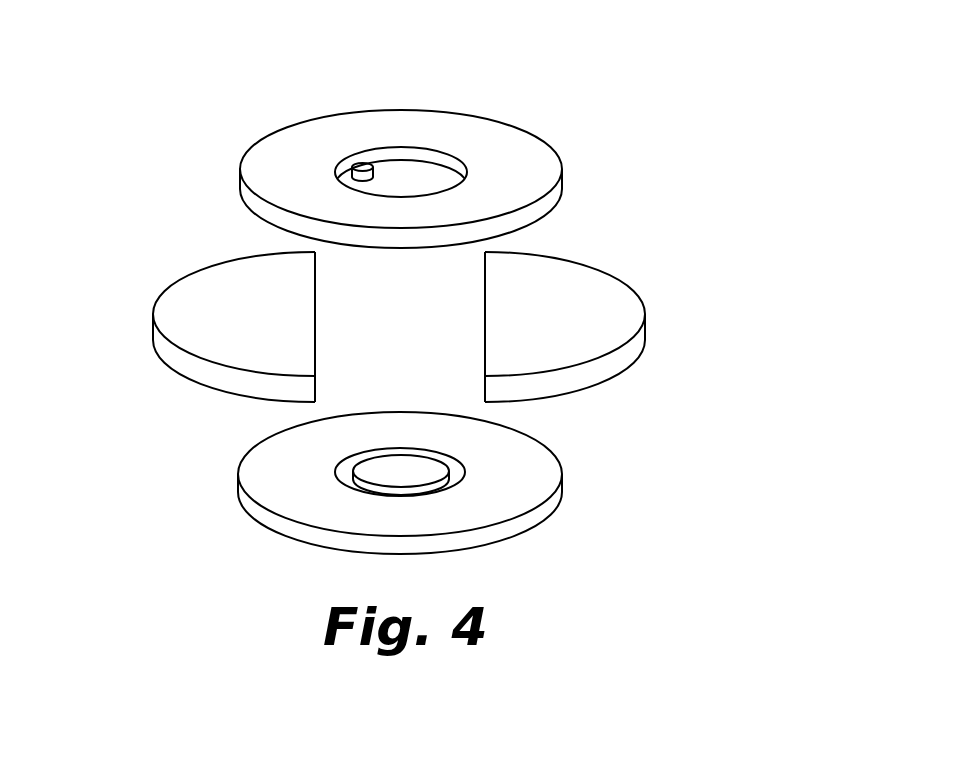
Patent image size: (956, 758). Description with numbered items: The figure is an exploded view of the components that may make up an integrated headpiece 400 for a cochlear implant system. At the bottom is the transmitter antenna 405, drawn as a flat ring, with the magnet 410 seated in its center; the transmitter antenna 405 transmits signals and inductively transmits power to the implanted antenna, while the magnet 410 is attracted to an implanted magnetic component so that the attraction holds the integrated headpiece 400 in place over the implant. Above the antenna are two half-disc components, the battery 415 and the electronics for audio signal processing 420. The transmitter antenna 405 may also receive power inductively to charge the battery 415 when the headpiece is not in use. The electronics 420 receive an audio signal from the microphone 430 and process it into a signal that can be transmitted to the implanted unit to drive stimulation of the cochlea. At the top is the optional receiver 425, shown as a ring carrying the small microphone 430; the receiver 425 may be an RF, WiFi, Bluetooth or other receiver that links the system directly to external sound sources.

The integrated headpiece 400 is at (708, 129).
The transmitter antenna 405 is at (523, 500).
The magnet 410 is at (372, 470).
The battery 415 is at (618, 313).
The electronics for audio signal processing 420 is at (185, 334).
The receiver 425 is at (527, 168).
The microphone 430 is at (356, 166).